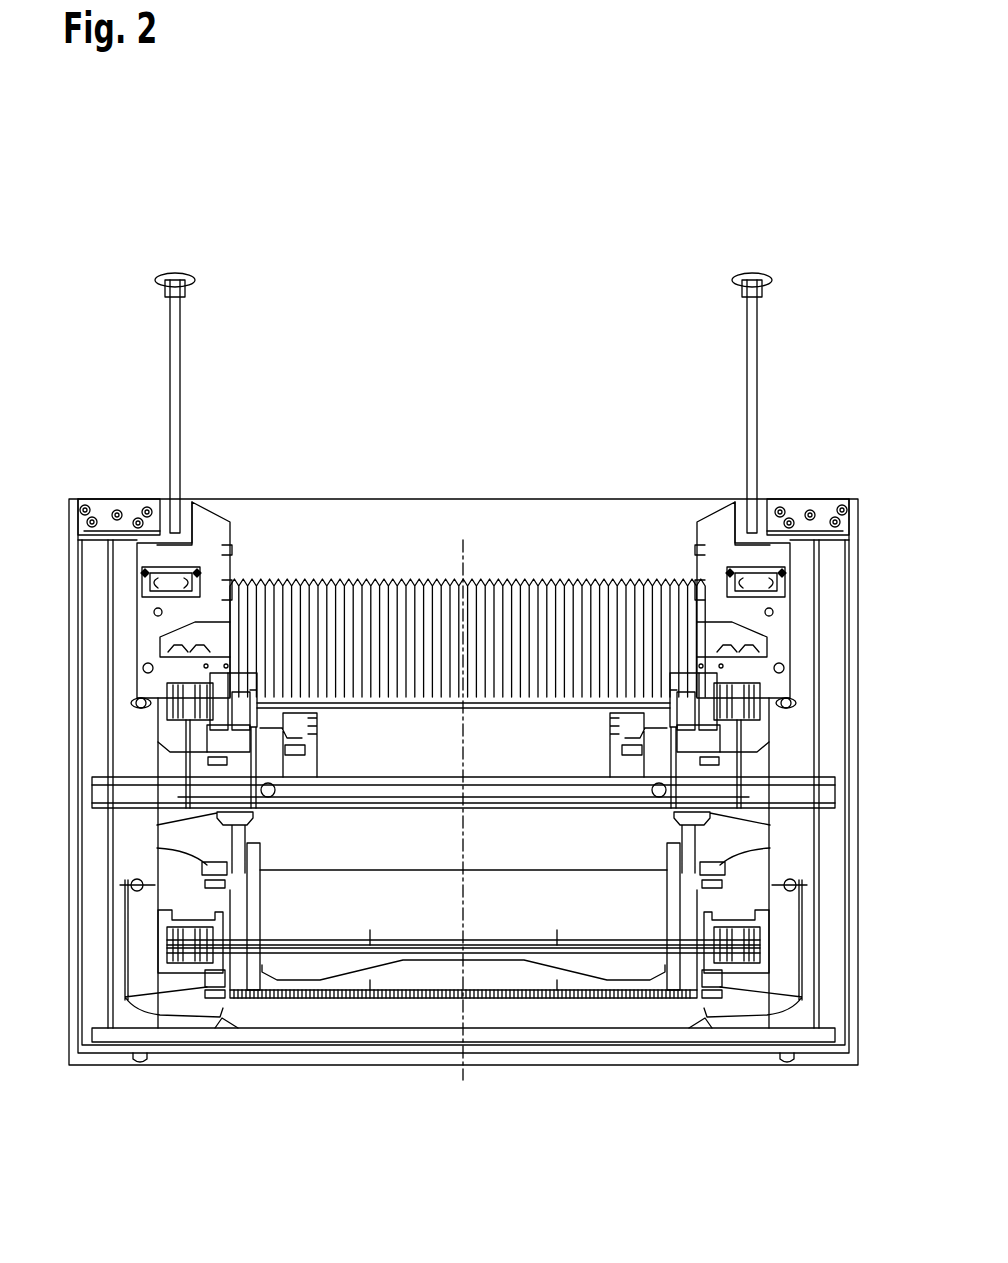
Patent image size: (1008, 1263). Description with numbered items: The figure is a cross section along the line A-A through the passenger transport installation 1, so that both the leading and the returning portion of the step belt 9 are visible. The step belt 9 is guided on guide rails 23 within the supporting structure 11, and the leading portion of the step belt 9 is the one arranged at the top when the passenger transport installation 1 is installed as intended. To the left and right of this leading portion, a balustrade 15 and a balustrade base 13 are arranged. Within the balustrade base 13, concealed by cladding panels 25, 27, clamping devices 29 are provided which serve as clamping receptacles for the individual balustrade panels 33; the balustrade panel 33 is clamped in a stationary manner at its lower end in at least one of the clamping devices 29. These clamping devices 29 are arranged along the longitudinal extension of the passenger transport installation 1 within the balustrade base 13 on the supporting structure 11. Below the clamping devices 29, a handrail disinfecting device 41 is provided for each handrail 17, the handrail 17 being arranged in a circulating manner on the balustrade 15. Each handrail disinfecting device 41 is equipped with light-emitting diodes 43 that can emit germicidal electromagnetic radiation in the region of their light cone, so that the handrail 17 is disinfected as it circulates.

The passenger transport installation 1 is at (472, 394).
The step belt 9 is at (885, 893).
The supporting structure 11 is at (894, 694).
The balustrade base 13 is at (897, 490).
The balustrade 15 is at (463, 485).
The handrail 17 is at (894, 565).
The guide rails 23 is at (892, 992).
The cladding panel 25 is at (715, 515).
The cladding panel 27 is at (843, 499).
The clamping device 29 is at (762, 500).
The balustrade panel 33 is at (820, 380).
The handrail disinfecting device 41 is at (894, 605).
The light-emitting diodes 43 is at (894, 645).